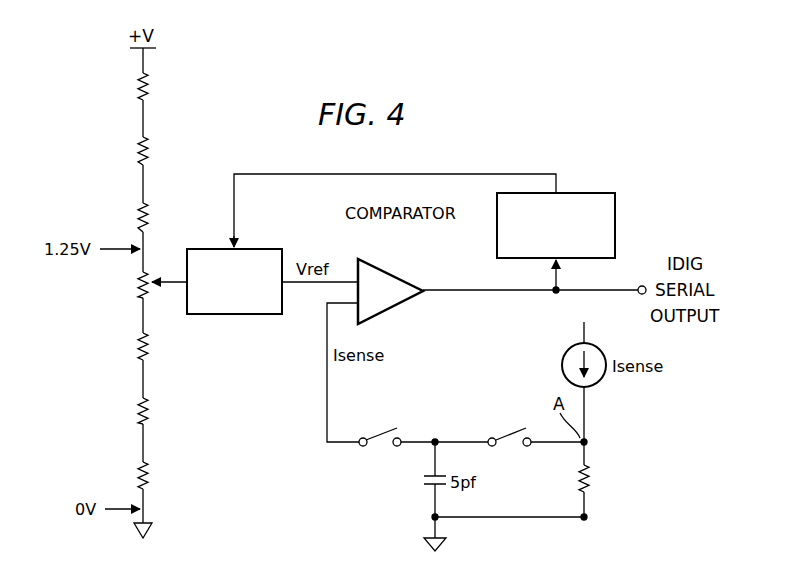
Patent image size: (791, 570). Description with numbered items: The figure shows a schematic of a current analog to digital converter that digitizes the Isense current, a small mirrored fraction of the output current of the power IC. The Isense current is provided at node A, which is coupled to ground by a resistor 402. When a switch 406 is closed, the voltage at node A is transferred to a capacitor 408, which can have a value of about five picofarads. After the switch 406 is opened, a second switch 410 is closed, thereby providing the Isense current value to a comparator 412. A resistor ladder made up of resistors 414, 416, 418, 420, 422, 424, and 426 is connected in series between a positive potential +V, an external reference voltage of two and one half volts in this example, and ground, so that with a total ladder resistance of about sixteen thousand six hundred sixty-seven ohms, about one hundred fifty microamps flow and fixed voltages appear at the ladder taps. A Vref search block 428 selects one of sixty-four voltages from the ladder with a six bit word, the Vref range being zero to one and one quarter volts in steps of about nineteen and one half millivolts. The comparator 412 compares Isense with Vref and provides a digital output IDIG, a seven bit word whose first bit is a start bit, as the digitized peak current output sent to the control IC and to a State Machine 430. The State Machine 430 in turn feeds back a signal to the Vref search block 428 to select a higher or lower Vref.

The resistor 402 is at (578, 480).
The switch 406 is at (512, 430).
The capacitor 408 is at (422, 480).
The switch 410 is at (385, 428).
The comparator 412 is at (390, 268).
The resistor 414 is at (138, 88).
The resistor 416 is at (138, 152).
The resistor 418 is at (138, 218).
The resistor 420 is at (138, 287).
The resistor 422 is at (138, 356).
The resistor 424 is at (138, 421).
The resistor 426 is at (150, 480).
The Vref search block 428 is at (226, 316).
The State Machine 430 is at (615, 212).